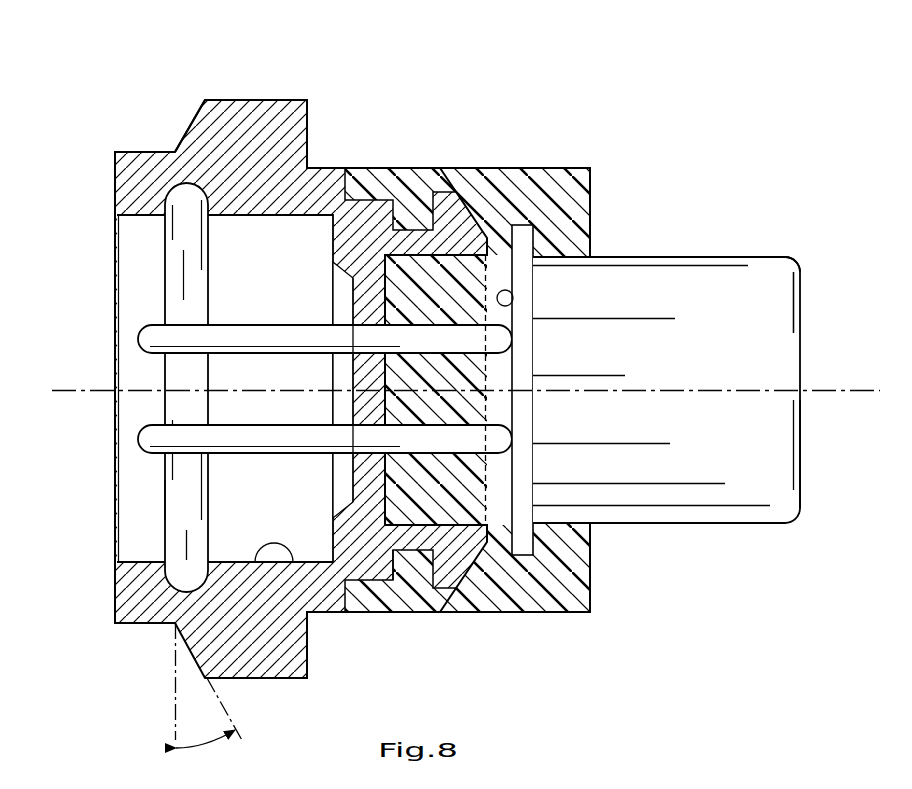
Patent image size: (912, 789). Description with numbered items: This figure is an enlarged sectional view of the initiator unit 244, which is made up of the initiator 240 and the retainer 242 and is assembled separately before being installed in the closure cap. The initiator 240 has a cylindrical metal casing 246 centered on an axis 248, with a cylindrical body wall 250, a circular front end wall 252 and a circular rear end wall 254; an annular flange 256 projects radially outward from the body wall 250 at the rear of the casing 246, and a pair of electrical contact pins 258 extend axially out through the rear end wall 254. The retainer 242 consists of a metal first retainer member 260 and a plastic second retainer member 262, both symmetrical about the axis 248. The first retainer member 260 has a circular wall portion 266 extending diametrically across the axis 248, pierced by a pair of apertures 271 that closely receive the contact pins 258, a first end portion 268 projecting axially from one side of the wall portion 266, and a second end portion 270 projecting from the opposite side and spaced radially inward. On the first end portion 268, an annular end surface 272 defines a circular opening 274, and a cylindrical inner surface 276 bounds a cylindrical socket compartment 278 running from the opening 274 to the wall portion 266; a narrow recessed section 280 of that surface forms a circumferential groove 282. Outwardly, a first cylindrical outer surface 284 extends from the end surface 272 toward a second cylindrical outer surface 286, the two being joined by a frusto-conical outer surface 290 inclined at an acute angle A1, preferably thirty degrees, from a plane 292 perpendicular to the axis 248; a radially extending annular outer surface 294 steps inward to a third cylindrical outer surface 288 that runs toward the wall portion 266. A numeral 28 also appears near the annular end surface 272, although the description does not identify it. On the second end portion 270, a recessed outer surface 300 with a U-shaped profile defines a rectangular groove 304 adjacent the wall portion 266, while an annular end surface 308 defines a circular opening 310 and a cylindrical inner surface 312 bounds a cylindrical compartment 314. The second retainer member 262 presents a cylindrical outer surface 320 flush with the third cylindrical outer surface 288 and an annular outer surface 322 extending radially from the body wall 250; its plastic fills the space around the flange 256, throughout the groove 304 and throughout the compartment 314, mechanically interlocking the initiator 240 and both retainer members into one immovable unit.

The reference surface 28 is at (130, 623).
The initiator 240 is at (798, 260).
The retainer 242 is at (108, 258).
The initiator unit 244 is at (157, 62).
The cylindrical metal casing 246 is at (772, 298).
The axis 248 is at (815, 392).
The cylindrical body wall 250 is at (747, 478).
The circular front end wall 252 is at (800, 435).
The circular rear end wall 254 is at (512, 285).
The annular flange 256 is at (523, 235).
The electrical contact pins 258 is at (140, 340).
The first retainer member 260 is at (142, 192).
The second retainer member 262 is at (562, 168).
The circular wall portion 266 is at (367, 372).
The first end portion 268 is at (298, 578).
The second end portion 270 is at (413, 533).
The apertures 271 is at (352, 330).
The annular end surface 272 is at (116, 585).
The circular opening 274 is at (118, 530).
The cylindrical inner surface 276 is at (257, 550).
The cylindrical socket compartment 278 is at (280, 305).
The narrow recessed section 280 is at (183, 497).
The groove 282 is at (190, 543).
The first cylindrical outer surface 284 is at (150, 152).
The second cylindrical outer surface 286 is at (266, 100).
The third cylindrical outer surface 288 is at (328, 168).
The frusto-conical outer surface 290 is at (185, 118).
The plane 292 is at (173, 728).
The radially extending annular outer surface 294 is at (313, 108).
The recessed outer surface 300 is at (419, 193).
The rectangular groove 304 is at (421, 168).
The annular end surface 308 is at (498, 540).
The circular opening 310 is at (492, 488).
The cylindrical inner surface 312 is at (436, 304).
The cylindrical compartment 314 is at (458, 417).
The cylindrical outer surface 320 is at (505, 168).
The annular outer surface 322 is at (590, 198).
The acute angle A1 is at (205, 752).